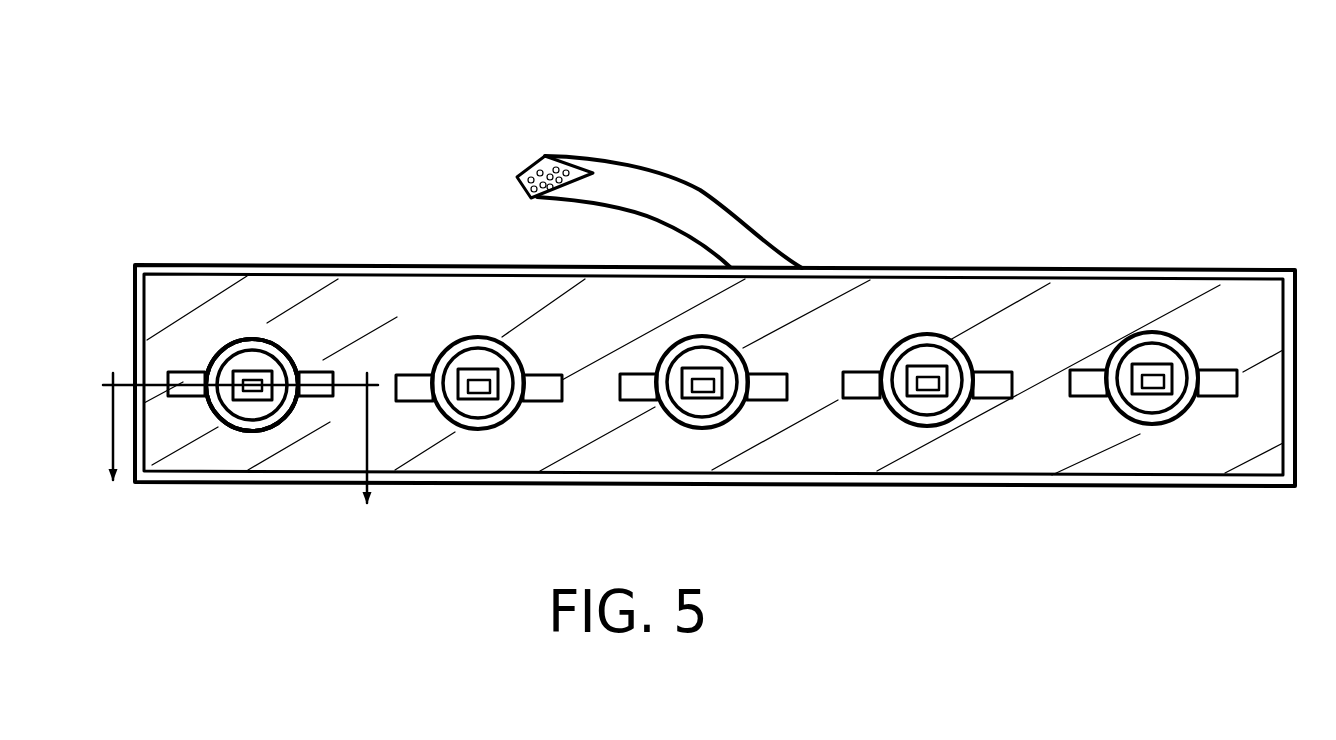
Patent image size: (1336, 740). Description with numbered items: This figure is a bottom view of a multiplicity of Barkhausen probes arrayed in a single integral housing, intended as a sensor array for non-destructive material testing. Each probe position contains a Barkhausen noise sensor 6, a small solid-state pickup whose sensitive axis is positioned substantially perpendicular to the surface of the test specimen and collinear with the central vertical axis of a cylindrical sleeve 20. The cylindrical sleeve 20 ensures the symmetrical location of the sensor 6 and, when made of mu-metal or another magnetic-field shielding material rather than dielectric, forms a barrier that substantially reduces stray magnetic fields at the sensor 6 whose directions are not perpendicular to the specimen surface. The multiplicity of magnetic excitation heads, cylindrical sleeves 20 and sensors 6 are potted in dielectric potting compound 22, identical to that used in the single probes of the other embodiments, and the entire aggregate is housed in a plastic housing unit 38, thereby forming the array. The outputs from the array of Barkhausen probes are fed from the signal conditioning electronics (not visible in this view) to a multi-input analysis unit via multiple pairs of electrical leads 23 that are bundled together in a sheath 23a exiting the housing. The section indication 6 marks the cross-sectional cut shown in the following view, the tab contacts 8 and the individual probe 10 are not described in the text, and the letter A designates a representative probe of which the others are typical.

The sensor 6 is at (283, 349).
The electrical contact tabs 8 is at (206, 370).
The LED light source 10 is at (236, 419).
The cylindrical sleeve 20 is at (260, 376).
The potting compound 22 is at (238, 337).
The electrical leads 23 is at (545, 156).
The sheath 23a is at (745, 212).
The plastic housing unit 38 is at (1013, 266).
The LED assembly A is at (258, 435).